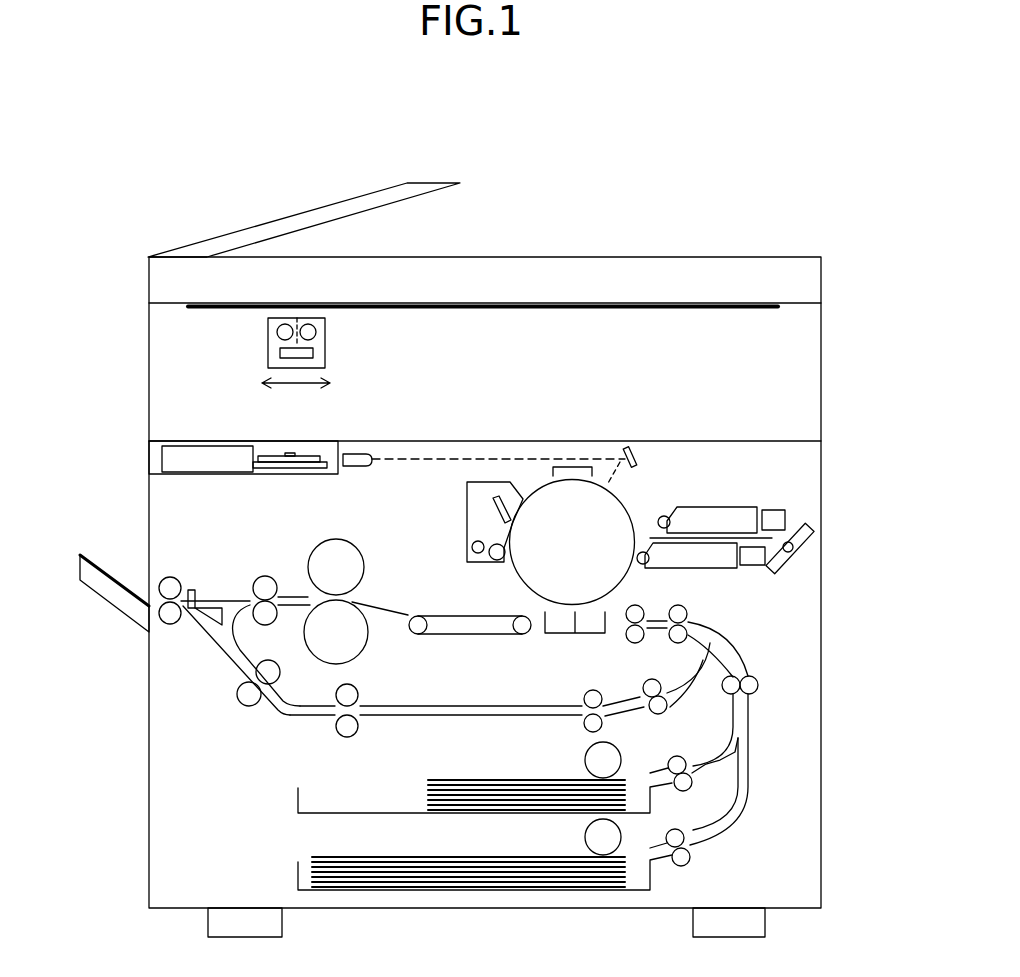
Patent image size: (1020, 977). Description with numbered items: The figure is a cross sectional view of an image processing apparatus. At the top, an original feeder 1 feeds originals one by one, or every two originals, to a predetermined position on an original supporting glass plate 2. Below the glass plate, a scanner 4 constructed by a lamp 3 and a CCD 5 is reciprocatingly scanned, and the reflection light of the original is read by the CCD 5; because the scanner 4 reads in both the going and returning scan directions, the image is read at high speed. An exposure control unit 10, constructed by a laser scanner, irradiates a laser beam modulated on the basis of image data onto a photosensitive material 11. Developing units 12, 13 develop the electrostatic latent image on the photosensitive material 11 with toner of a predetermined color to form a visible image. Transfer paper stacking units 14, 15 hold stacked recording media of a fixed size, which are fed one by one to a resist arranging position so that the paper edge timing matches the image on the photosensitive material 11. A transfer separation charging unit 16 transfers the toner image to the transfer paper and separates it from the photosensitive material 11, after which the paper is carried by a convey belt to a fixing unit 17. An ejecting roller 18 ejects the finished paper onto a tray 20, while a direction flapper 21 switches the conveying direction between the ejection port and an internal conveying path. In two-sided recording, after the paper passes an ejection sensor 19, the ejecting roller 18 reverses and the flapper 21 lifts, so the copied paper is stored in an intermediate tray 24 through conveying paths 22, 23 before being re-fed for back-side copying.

The original feeder 1 is at (240, 230).
The original supporting glass plate 2 is at (758, 303).
The lamp 3 is at (300, 323).
The scanner 4 is at (326, 330).
The CCD 5 is at (316, 352).
The exposure control unit 10 is at (277, 452).
The photosensitive material 11 is at (622, 497).
The developing unit 12 is at (747, 505).
The developing unit 13 is at (725, 563).
The transfer paper stacking unit 14 is at (627, 803).
The transfer paper stacking unit 15 is at (650, 887).
The transfer separation charging unit 16 is at (582, 631).
The fixing unit 17 is at (317, 610).
The ejecting roller 18 is at (163, 603).
The ejection sensor 19 is at (190, 590).
The tray 20 is at (130, 622).
The direction flapper 21 is at (227, 605).
The conveying path 22 is at (222, 640).
The conveying path 23 is at (283, 718).
The intermediate tray 24 is at (468, 715).